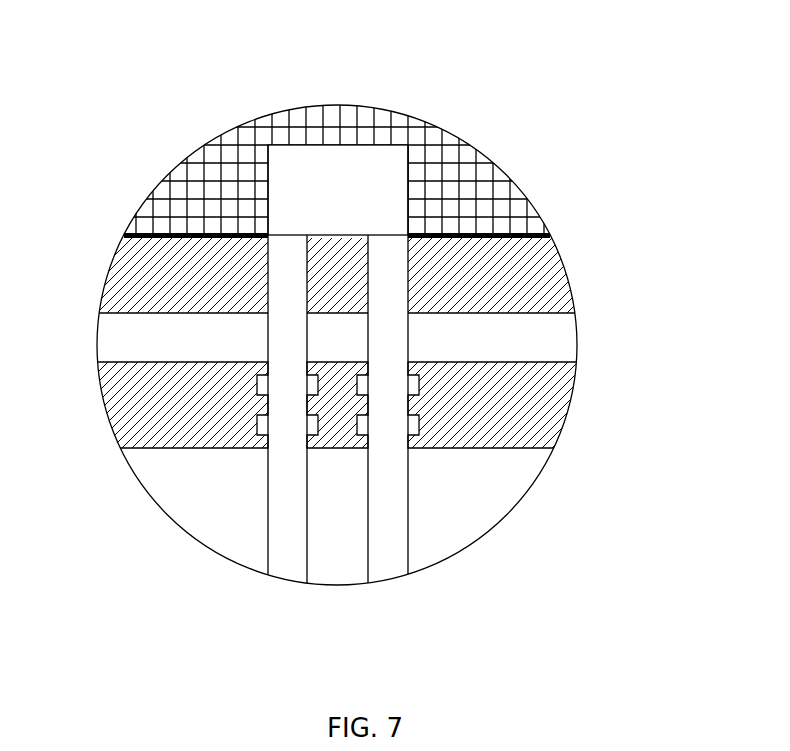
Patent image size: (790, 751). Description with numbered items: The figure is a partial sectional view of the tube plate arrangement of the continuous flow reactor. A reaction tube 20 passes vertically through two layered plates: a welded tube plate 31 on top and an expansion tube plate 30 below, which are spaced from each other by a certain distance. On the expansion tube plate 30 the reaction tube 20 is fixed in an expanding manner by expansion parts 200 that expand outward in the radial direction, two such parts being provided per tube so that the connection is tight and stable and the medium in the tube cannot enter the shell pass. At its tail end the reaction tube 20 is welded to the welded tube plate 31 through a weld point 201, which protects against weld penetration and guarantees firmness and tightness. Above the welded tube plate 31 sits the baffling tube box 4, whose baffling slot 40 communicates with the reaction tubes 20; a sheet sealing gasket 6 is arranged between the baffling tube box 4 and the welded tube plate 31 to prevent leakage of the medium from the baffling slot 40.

The baffling slot 40 is at (297, 180).
The baffling tube box 4 is at (515, 195).
The weld point 201 is at (368, 235).
The sheet sealing gasket 6 is at (155, 215).
The welded tube plate 31 is at (525, 283).
The expansion tube plate 30 is at (540, 413).
The reaction tube 20 is at (288, 497).
The expansion part 200 is at (410, 447).